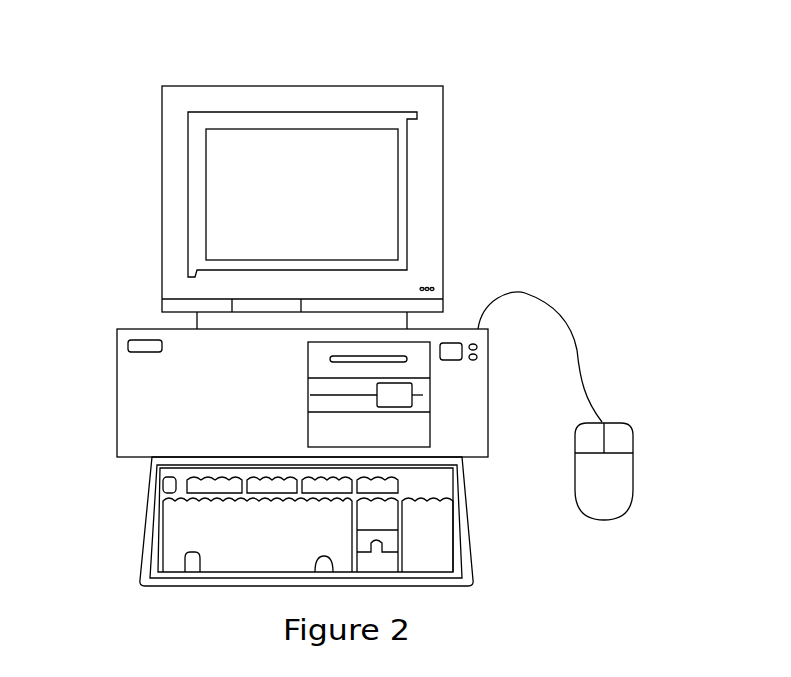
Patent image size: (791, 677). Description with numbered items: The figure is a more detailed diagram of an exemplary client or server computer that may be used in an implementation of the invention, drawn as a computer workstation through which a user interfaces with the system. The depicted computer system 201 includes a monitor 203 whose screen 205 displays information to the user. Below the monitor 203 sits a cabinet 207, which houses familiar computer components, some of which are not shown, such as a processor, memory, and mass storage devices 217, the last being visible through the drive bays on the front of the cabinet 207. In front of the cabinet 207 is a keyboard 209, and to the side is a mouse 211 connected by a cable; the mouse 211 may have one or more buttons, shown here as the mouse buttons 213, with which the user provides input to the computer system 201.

The computer system 201 is at (460, 68).
The monitor 203 is at (443, 175).
The screen 205 is at (224, 185).
The cabinet 207 is at (140, 329).
The keyboard 209 is at (185, 590).
The mouse 211 is at (603, 508).
The mouse buttons 213 is at (597, 443).
The mass storage devices 217 is at (420, 345).